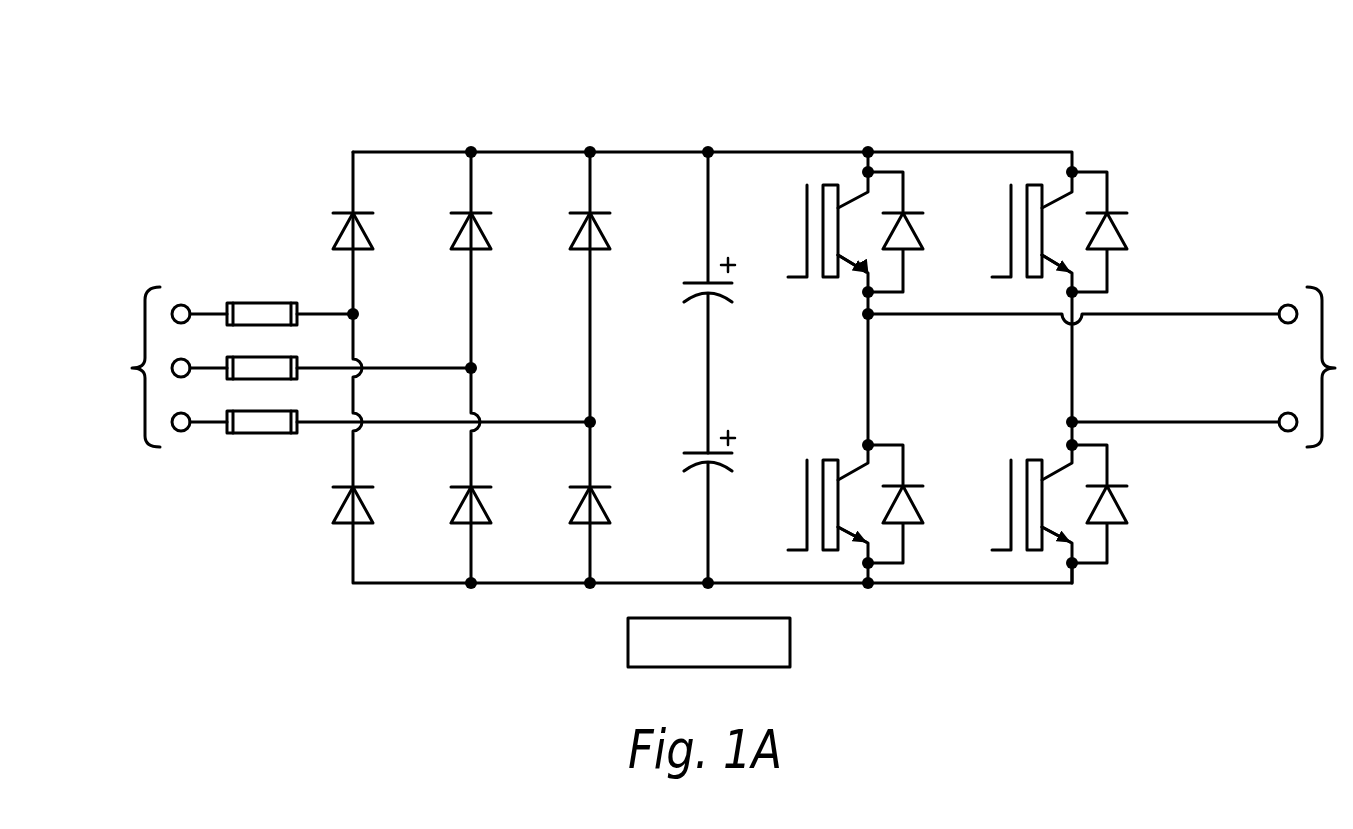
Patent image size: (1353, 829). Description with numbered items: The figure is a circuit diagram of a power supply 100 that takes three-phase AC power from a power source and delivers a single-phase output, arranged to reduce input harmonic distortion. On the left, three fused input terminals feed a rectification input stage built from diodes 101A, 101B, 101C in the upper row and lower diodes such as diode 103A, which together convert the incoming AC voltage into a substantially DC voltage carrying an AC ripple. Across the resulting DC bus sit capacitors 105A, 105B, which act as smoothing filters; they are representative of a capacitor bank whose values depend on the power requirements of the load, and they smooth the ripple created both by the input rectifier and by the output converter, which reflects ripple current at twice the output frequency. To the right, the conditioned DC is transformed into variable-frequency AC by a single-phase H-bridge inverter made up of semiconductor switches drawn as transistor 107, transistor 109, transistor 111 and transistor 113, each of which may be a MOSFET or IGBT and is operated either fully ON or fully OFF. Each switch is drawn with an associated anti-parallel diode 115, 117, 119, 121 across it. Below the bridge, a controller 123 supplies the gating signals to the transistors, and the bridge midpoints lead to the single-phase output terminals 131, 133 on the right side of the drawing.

The power supply 100 is at (644, 92).
The diode 101A is at (333, 236).
The diode 101B is at (455, 236).
The diode 101C is at (573, 236).
The diode 103A is at (338, 502).
The capacitor 105A is at (699, 283).
The capacitor 105B is at (699, 453).
The transistor 107 is at (804, 222).
The transistor 109 is at (803, 480).
The transistor 111 is at (1033, 279).
The transistor 113 is at (1033, 458).
The freewheeling diode of Q1 115 is at (923, 237).
The freewheeling diode of Q2 117 is at (923, 511).
The freewheeling diode of Q3 119 is at (1128, 238).
The freewheeling diode of Q4 121 is at (1128, 513).
The controller 123 is at (628, 647).
The output terminal 131 is at (1168, 314).
The output terminal 133 is at (1168, 422).